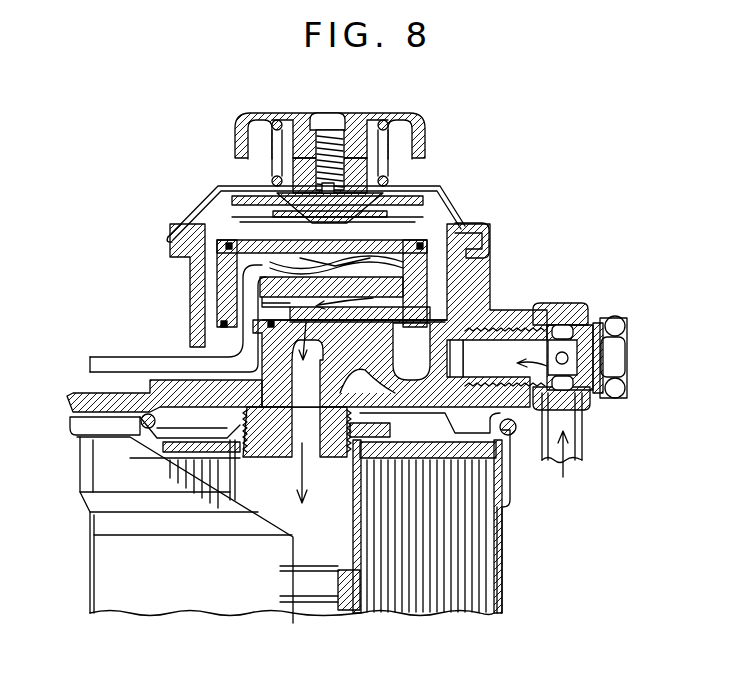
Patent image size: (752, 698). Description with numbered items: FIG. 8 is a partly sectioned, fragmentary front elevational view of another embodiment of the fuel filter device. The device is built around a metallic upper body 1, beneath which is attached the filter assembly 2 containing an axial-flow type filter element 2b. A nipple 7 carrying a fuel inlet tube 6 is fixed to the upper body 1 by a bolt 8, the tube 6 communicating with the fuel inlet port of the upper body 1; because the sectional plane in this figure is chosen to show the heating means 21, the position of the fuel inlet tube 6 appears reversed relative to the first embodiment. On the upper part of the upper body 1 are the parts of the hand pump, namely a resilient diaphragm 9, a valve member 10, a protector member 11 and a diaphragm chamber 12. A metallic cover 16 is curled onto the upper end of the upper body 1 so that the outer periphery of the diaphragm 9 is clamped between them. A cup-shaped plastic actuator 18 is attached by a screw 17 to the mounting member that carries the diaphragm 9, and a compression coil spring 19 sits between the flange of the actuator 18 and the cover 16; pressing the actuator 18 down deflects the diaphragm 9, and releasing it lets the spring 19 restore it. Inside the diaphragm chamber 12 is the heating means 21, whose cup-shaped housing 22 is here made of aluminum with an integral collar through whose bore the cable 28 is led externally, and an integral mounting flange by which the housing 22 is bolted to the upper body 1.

The upper body 1 is at (497, 324).
The filter assembly 2 is at (90, 576).
The filter element 2b is at (488, 521).
The fuel inlet tube 6 is at (581, 450).
The nipple 7 is at (584, 408).
The bolt 8 is at (617, 327).
The diaphragm 9 is at (222, 213).
The valve member 10 is at (438, 322).
The protector member 11 is at (447, 290).
The diaphragm chamber 12 is at (420, 217).
The cover 16 is at (427, 187).
The screw 17 is at (325, 118).
The actuator 18 is at (419, 117).
The compression coil spring 19 is at (275, 118).
The heating means 21 is at (466, 232).
The housing 22 is at (212, 291).
The cable 28 is at (122, 357).